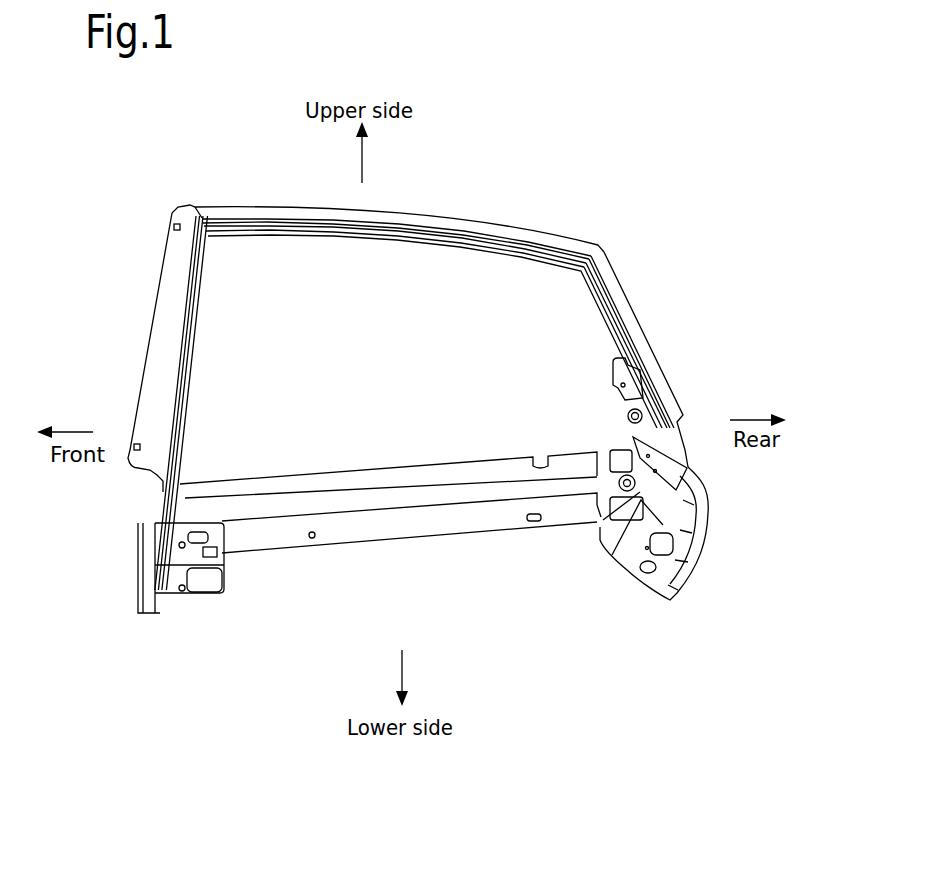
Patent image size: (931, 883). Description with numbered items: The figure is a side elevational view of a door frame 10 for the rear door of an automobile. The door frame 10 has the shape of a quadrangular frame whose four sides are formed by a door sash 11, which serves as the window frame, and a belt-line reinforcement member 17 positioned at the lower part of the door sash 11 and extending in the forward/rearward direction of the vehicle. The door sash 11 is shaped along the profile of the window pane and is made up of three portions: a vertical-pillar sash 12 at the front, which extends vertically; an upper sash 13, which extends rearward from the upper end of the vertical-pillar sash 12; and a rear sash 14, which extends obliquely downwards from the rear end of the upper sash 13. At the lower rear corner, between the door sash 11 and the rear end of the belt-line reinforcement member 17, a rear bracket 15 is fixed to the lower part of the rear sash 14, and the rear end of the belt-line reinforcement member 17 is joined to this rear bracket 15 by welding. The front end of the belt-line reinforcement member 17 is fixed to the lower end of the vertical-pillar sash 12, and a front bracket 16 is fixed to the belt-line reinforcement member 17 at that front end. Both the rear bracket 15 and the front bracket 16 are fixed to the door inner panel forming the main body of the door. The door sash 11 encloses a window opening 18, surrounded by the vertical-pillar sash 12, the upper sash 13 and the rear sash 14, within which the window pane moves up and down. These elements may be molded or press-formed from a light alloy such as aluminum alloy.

The door frame 10 is at (706, 121).
The door sash 11 is at (275, 190).
The vertical-pillar sash 12 is at (172, 334).
The upper sash 13 is at (485, 222).
The rear sash 14 is at (640, 333).
The rear bracket 15 is at (673, 526).
The front bracket 16 is at (204, 580).
The belt-line reinforcement member 17 is at (377, 523).
The window opening 18 is at (230, 302).